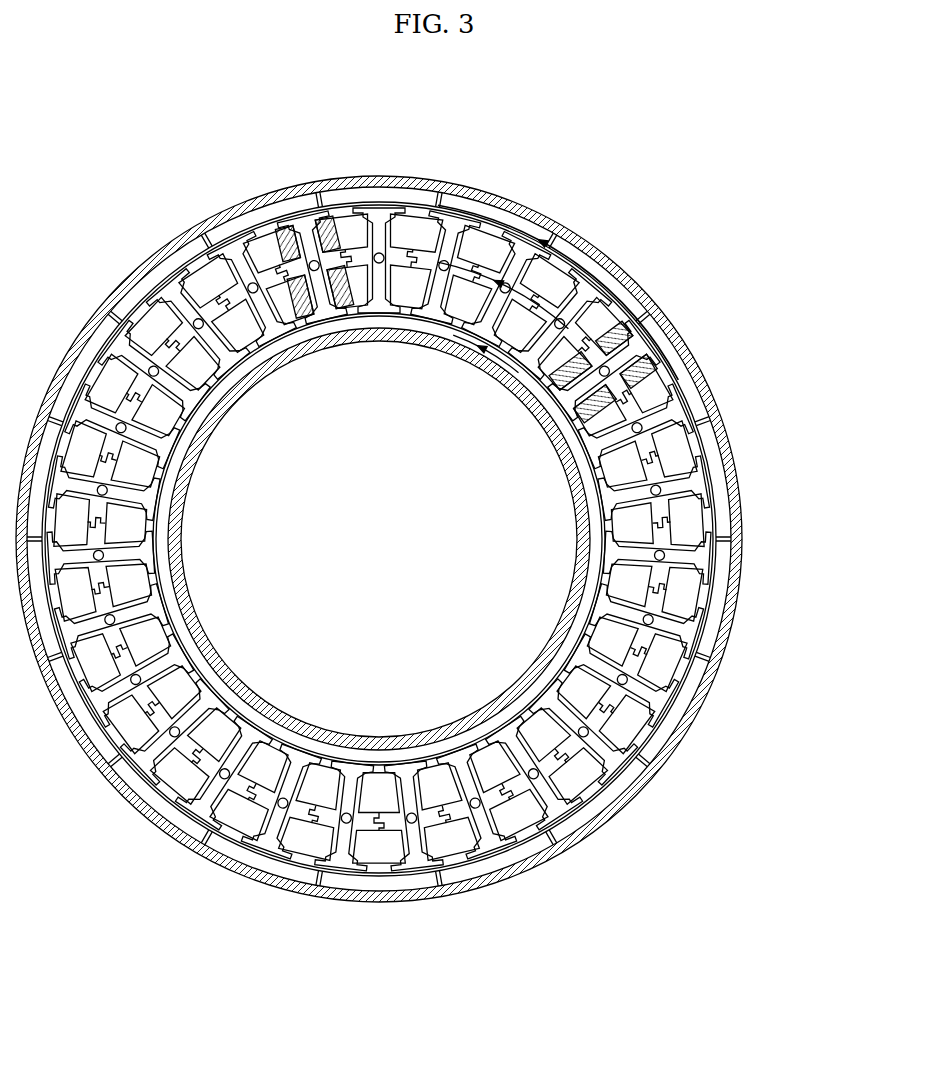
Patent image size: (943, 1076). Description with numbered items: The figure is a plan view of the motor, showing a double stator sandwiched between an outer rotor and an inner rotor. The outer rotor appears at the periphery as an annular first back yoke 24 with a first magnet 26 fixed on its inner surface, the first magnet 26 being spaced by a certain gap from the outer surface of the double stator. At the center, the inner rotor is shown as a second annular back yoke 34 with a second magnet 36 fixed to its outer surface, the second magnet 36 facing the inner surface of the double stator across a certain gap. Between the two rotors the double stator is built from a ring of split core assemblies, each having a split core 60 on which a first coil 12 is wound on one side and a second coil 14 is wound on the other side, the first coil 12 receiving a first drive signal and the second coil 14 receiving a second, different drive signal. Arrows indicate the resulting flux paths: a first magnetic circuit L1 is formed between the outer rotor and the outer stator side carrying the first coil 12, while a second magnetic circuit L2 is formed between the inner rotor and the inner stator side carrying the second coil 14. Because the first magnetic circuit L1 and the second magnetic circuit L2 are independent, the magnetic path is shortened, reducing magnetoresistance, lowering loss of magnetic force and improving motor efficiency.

The first coil 12 is at (652, 378).
The second coil 14 is at (565, 372).
The first back yoke 24 is at (380, 177).
The first magnet 26 is at (740, 463).
The second annular back yoke 34 is at (383, 343).
The second magnet 36 is at (561, 398).
The split core 60 is at (628, 354).
The first magnetic circuit L1 is at (570, 234).
The second magnetic circuit L2 is at (618, 328).